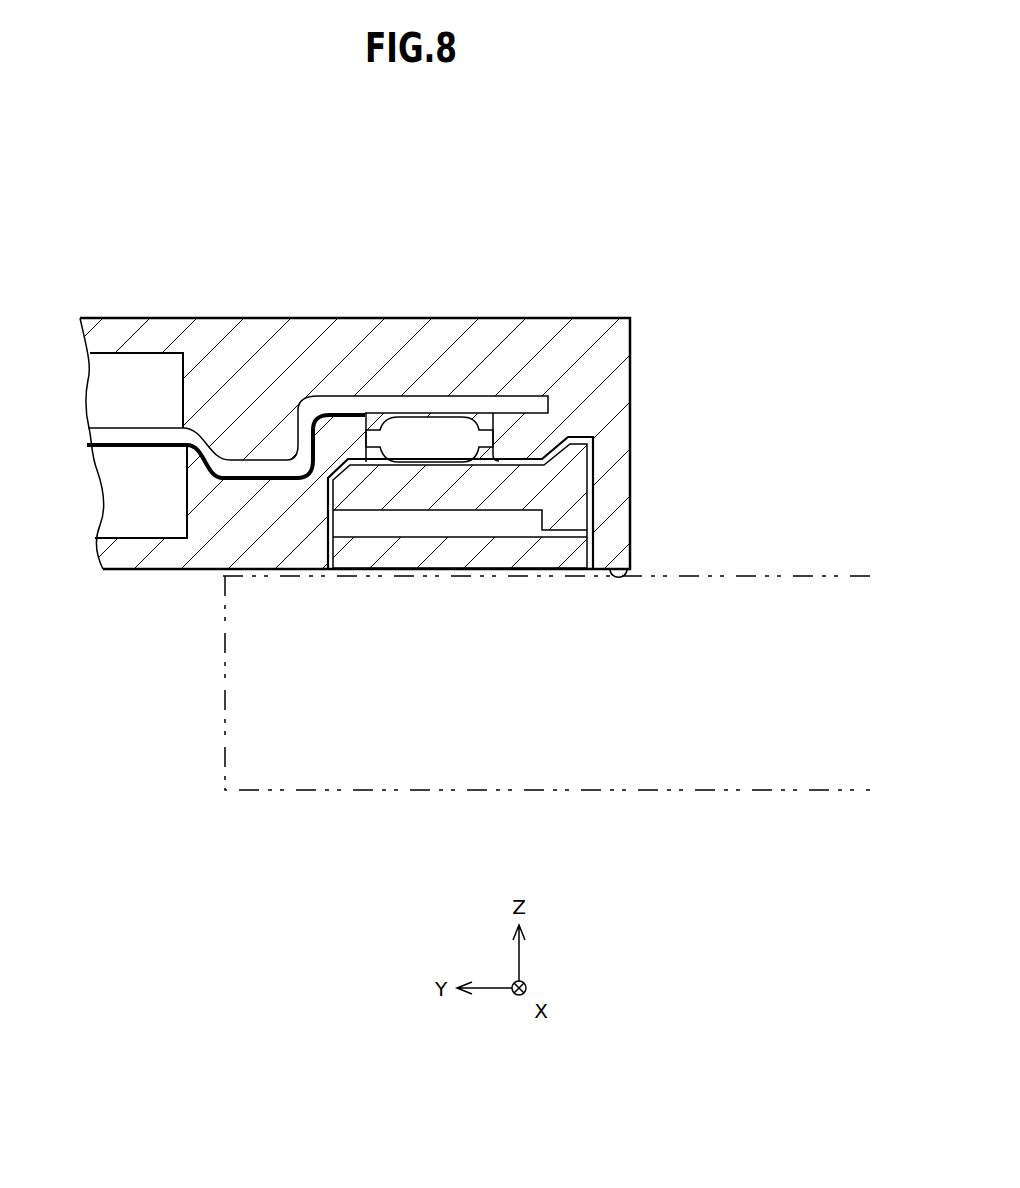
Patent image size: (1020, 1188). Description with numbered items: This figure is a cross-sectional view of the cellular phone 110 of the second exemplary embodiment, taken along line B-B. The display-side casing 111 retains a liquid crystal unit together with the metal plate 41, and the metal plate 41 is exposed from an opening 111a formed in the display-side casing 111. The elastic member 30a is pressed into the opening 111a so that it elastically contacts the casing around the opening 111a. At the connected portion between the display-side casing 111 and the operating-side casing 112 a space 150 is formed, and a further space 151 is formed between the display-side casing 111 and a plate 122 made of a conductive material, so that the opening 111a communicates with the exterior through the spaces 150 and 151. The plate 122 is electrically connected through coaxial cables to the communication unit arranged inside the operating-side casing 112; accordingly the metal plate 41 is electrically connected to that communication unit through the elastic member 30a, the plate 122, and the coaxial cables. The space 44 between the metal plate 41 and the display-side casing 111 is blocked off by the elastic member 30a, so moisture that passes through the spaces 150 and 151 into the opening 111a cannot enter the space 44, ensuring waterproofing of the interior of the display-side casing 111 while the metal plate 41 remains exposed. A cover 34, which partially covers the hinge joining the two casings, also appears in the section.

The cellular phone 110 is at (742, 188).
The display-side casing 111 is at (178, 318).
The opening 111a is at (488, 460).
The operating-side casing 112 is at (757, 575).
The metal plate 41 is at (130, 418).
The space 44 is at (300, 478).
The elastic member 30a is at (408, 412).
The cover 34 is at (502, 548).
The plate 122 is at (575, 554).
The space 150 is at (627, 570).
The space 151 is at (592, 521).